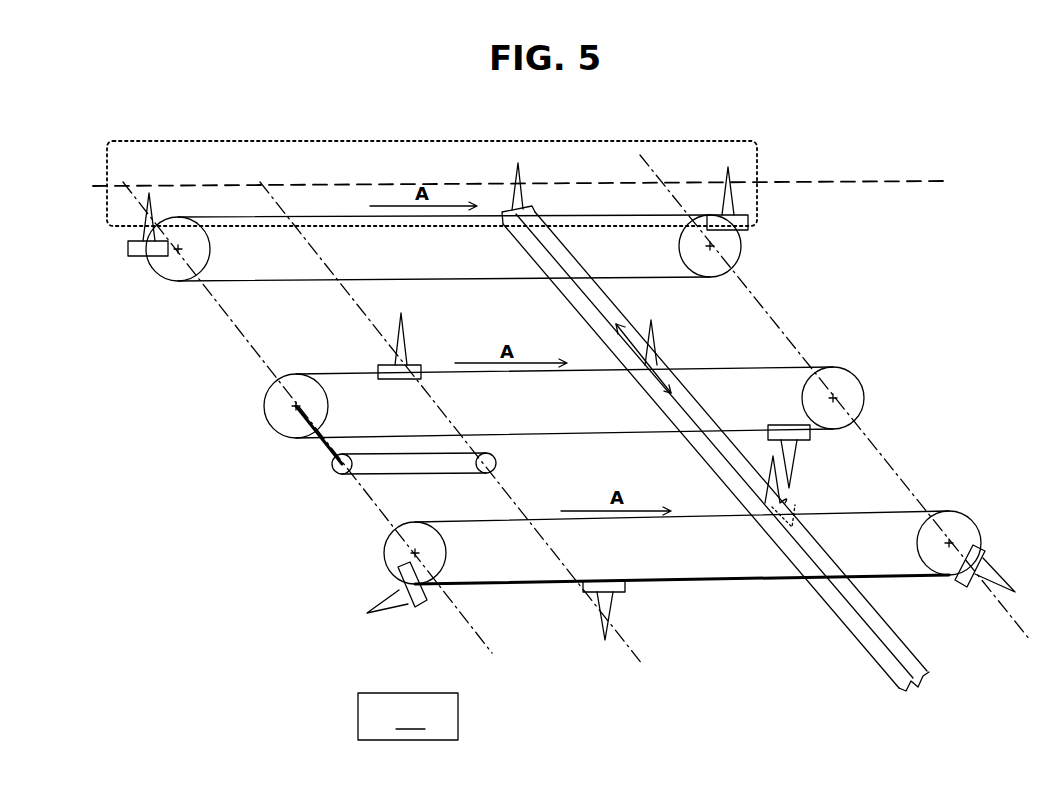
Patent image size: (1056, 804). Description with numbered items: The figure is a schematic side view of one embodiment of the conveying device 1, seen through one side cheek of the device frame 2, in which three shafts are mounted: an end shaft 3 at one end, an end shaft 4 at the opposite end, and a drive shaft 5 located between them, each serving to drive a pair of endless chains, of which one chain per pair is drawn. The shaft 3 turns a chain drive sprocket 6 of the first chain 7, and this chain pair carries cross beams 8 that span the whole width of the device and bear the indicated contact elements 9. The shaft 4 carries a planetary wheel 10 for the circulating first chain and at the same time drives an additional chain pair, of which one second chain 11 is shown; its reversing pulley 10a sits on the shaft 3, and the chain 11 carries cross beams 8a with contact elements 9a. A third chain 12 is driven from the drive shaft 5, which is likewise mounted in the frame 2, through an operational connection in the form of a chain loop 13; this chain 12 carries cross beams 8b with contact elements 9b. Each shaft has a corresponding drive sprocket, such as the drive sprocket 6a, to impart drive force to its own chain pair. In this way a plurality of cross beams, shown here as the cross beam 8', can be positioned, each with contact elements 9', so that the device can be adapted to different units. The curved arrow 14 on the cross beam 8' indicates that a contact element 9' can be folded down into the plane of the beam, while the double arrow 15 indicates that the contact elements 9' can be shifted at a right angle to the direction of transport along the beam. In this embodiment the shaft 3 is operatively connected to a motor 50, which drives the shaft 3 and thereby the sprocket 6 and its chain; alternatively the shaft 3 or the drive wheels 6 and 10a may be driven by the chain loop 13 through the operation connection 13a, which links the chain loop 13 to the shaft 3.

The device 1 is at (902, 303).
The device frame 2 is at (150, 163).
The end shaft 3 is at (230, 318).
The end shaft 4 is at (882, 462).
The drive shaft 5 is at (622, 637).
The chain drive sprocket 6 is at (165, 278).
The drive sprocket 6a is at (957, 524).
The first chain 7 is at (257, 283).
The cross beam 8 is at (118, 272).
The cross beam 8' is at (715, 451).
The cross beam 8a is at (412, 610).
The cross beam 8b is at (382, 370).
The contact element 9 is at (417, 320).
The contact element 9' is at (678, 330).
The contact element 9a is at (388, 599).
The contact element 9b is at (408, 338).
The planetary wheel 10 is at (736, 243).
The reversing pulley 10a is at (386, 549).
The second chain 11 is at (724, 582).
The third chain 12 is at (598, 434).
The chain loop 13 is at (377, 475).
The operation connection 13a is at (330, 440).
The curved arrow 14 is at (793, 505).
The double arrow 15 is at (668, 375).
The motor 50 is at (480, 637).